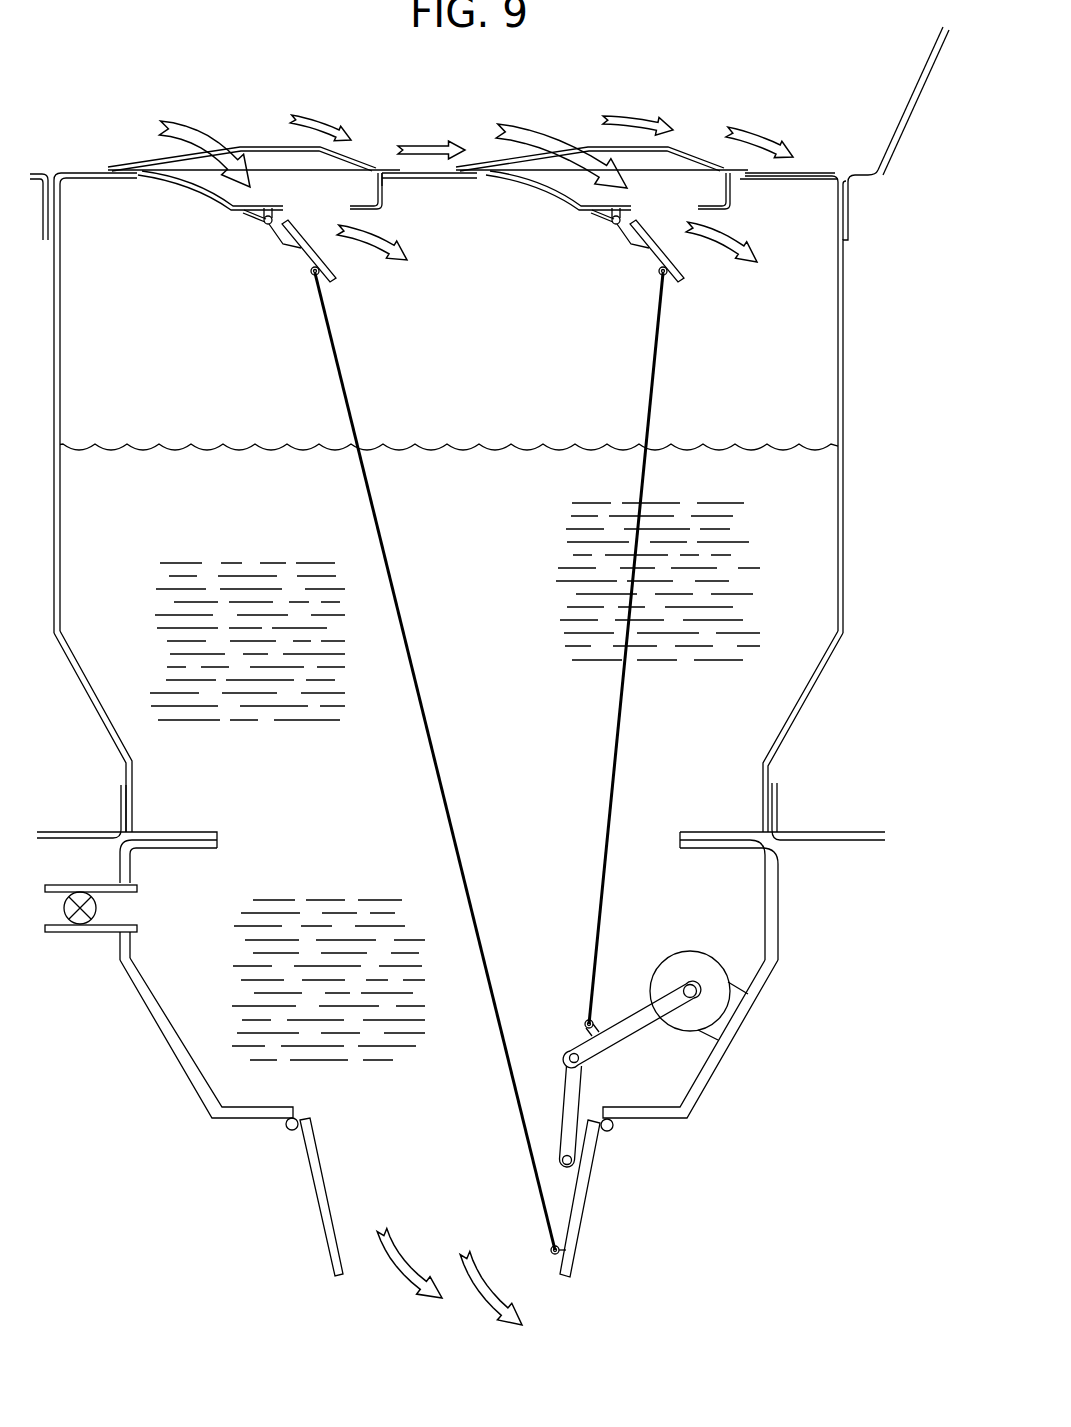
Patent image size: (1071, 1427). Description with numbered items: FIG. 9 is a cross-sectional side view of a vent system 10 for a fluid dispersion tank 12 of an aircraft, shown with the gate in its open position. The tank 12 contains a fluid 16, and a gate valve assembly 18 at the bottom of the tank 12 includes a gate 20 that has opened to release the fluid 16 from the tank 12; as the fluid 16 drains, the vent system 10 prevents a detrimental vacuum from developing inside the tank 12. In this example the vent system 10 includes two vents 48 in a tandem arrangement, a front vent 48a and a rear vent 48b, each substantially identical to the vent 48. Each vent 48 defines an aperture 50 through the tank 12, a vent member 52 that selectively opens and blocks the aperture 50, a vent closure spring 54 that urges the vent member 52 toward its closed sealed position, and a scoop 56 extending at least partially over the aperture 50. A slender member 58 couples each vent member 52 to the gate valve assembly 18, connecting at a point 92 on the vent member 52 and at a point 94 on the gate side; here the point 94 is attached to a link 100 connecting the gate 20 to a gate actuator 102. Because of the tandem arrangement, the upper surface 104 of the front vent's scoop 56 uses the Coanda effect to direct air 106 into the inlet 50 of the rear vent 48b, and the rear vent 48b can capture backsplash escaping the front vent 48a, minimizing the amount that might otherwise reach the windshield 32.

The vent system 10 is at (770, 79).
The fluid dispersion tank 12 is at (846, 348).
The fluid 16 is at (480, 445).
The gate valve assembly 18 is at (780, 913).
The gate 20 is at (314, 1200).
The windshield 32 is at (918, 75).
The vent 48 is at (405, 117).
The front vent 48a is at (248, 257).
The rear vent 48b is at (561, 217).
The aperture 50 is at (627, 185).
The vent member 52 is at (308, 256).
The vent closure spring 54 is at (250, 213).
The scoop 56 is at (255, 147).
The slender member 58 is at (614, 750).
The point 92 is at (313, 276).
The point 94 is at (584, 1027).
The link 100 is at (632, 1005).
The gate actuator 102 is at (717, 960).
The upper surface 104 is at (363, 164).
The air 106 is at (188, 138).